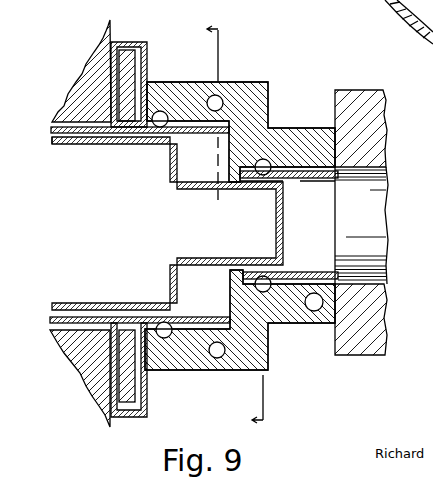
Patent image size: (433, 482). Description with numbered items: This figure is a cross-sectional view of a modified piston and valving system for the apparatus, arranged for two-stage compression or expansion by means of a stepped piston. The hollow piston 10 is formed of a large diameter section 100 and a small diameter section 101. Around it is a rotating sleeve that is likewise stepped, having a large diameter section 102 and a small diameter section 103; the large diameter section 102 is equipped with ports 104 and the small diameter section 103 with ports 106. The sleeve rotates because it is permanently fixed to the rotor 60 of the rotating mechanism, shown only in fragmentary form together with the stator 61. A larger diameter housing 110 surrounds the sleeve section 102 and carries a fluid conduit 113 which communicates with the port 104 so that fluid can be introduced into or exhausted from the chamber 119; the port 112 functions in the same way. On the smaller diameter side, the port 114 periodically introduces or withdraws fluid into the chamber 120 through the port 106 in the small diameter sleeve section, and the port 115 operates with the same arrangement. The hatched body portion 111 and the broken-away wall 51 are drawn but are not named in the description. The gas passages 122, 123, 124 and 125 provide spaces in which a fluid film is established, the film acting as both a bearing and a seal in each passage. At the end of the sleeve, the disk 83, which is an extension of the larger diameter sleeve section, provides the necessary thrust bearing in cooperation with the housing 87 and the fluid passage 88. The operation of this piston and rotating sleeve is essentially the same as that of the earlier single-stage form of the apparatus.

The piston 10 is at (225, 228).
The housing wall 51 is at (97, 50).
The rotor 60 is at (378, 208).
The stator 61 is at (383, 116).
The disk 83 is at (137, 56).
The housing 87 is at (126, 43).
The fluid passage 88 is at (138, 72).
The large diameter section 100 is at (115, 228).
The small diameter section 101 is at (203, 248).
The large diameter section of rotating sleeve 102 is at (175, 160).
The small diameter section of rotating sleeve 103 is at (392, 3).
The ports 104 is at (147, 148).
The ports 106 is at (257, 174).
The larger diameter housing 110 is at (197, 361).
The block portion 111 is at (277, 310).
The port 112 is at (165, 114).
The fluid conduit 113 is at (216, 97).
The port 114 is at (262, 288).
The port 115 is at (315, 311).
The chamber 119 is at (216, 168).
The chamber 120 is at (322, 241).
The gas passage 122 is at (62, 150).
The gas passage 123 is at (250, 173).
The gas passage 124 is at (233, 127).
The gas passage 125 is at (292, 278).